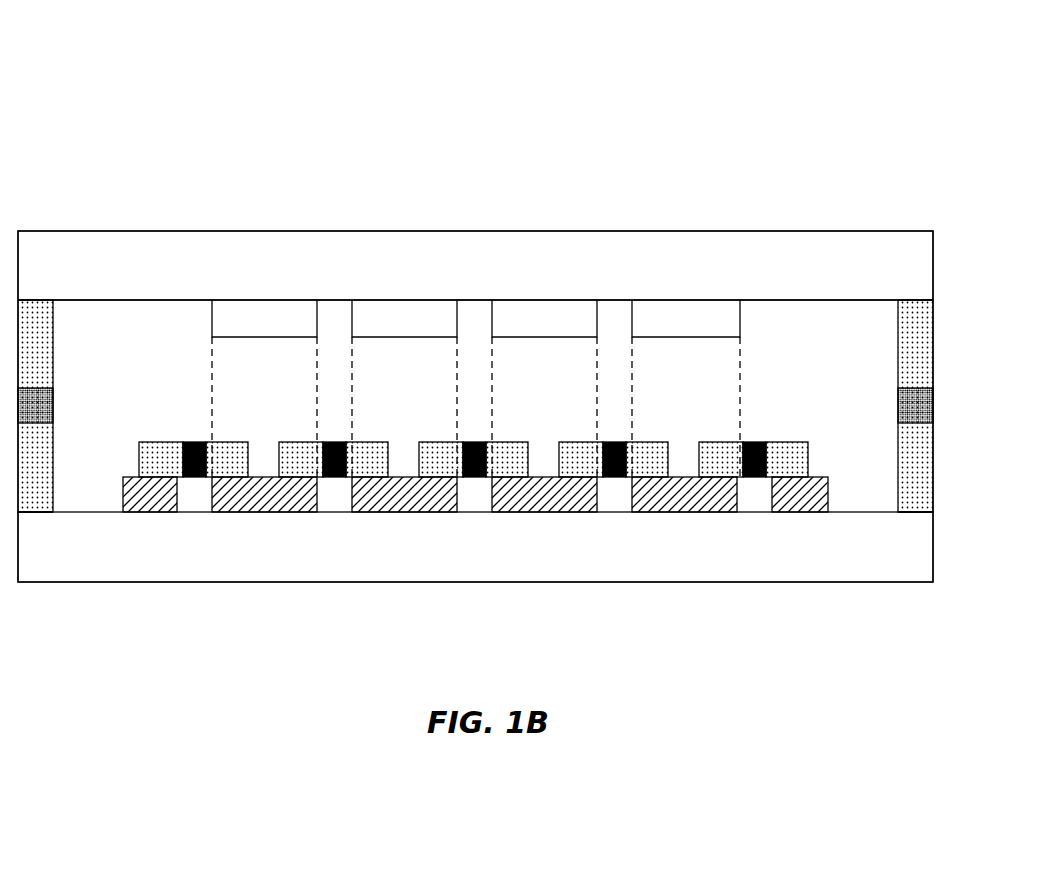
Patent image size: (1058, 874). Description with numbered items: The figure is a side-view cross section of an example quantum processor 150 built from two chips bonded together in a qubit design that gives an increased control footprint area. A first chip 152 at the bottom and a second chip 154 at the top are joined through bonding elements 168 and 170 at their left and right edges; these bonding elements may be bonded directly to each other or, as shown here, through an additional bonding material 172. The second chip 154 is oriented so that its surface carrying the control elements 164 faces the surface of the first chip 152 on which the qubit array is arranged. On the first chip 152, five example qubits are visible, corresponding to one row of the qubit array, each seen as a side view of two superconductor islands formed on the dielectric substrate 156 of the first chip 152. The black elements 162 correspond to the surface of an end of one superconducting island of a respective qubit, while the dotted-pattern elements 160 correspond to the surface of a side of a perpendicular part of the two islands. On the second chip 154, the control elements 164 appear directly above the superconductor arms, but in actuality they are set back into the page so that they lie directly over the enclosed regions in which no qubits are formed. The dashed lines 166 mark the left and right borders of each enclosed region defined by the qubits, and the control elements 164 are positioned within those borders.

The quantum processor 150 is at (147, 125).
The first chip 152 is at (831, 585).
The second chip 154 is at (828, 229).
The dielectric substrate 156 is at (265, 515).
The element with a dotted pattern 160 is at (153, 440).
The black elements 162 is at (191, 440).
The control elements 164 is at (265, 298).
The dashed lines 166 is at (212, 365).
The bonding elements 168 is at (36, 515).
The bonding elements 170 is at (36, 297).
The bonding material 172 is at (56, 407).